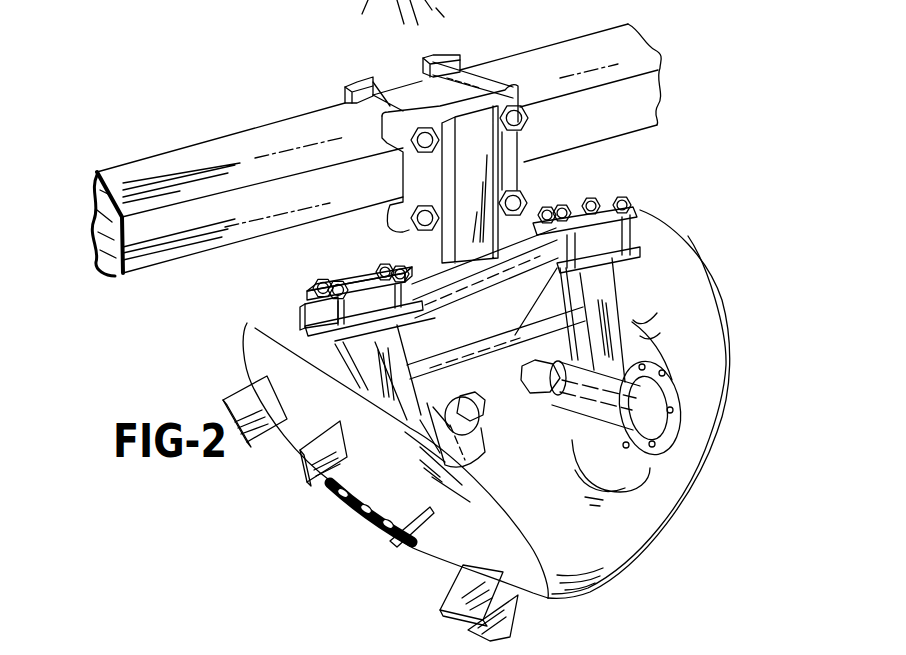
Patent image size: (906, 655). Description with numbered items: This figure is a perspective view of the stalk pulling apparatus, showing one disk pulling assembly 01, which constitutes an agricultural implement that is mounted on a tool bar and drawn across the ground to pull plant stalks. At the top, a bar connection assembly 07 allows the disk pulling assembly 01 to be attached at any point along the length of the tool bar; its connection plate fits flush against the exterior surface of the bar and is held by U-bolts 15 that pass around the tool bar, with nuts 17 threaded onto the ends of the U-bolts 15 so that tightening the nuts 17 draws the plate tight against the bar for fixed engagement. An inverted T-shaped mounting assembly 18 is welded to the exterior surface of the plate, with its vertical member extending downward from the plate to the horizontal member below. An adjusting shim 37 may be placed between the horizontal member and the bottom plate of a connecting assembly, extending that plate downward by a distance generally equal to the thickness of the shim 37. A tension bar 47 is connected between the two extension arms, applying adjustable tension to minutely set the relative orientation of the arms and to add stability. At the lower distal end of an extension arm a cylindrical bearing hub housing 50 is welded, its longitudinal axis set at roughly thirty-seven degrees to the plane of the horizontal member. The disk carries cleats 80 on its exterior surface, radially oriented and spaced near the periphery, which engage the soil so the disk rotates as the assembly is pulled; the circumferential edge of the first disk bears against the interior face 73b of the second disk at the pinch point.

The disk pulling assembly 01 is at (670, 533).
The bar connection assembly 07 is at (370, 58).
The U-bolts 15 is at (470, 77).
The nuts 17 is at (522, 190).
The inverted T-shaped mounting assembly 18 is at (413, 246).
The adjusting shim 37 is at (418, 313).
The tension bar 47 is at (497, 333).
The bearing hub housing 50 is at (580, 398).
The interior face of the second disk 73b is at (398, 468).
The cleats 80 is at (247, 400).